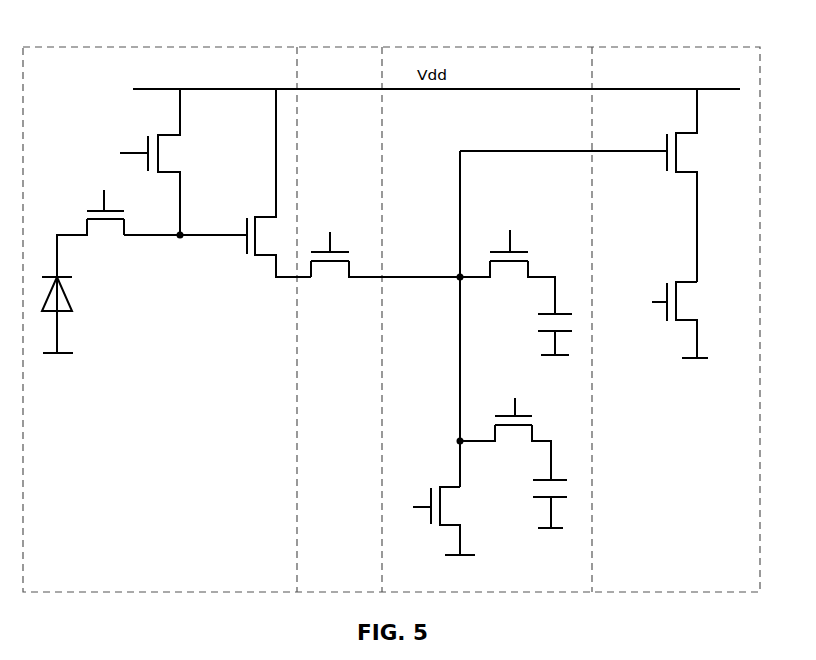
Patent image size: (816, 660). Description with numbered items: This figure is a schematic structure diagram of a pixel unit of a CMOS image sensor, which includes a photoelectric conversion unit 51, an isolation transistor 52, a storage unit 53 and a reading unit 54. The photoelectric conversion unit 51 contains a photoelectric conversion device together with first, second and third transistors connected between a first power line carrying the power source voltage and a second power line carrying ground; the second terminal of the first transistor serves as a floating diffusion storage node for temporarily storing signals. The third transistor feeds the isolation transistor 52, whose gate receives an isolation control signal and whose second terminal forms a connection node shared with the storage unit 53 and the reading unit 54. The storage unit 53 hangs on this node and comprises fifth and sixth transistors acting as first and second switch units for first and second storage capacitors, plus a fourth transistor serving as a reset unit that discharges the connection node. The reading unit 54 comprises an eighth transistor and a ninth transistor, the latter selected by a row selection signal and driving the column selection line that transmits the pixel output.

The photoelectric conversion unit 51 is at (107, 68).
The isolation transistor 52 is at (385, 258).
The storage unit 53 is at (508, 68).
The reading unit 54 is at (655, 68).